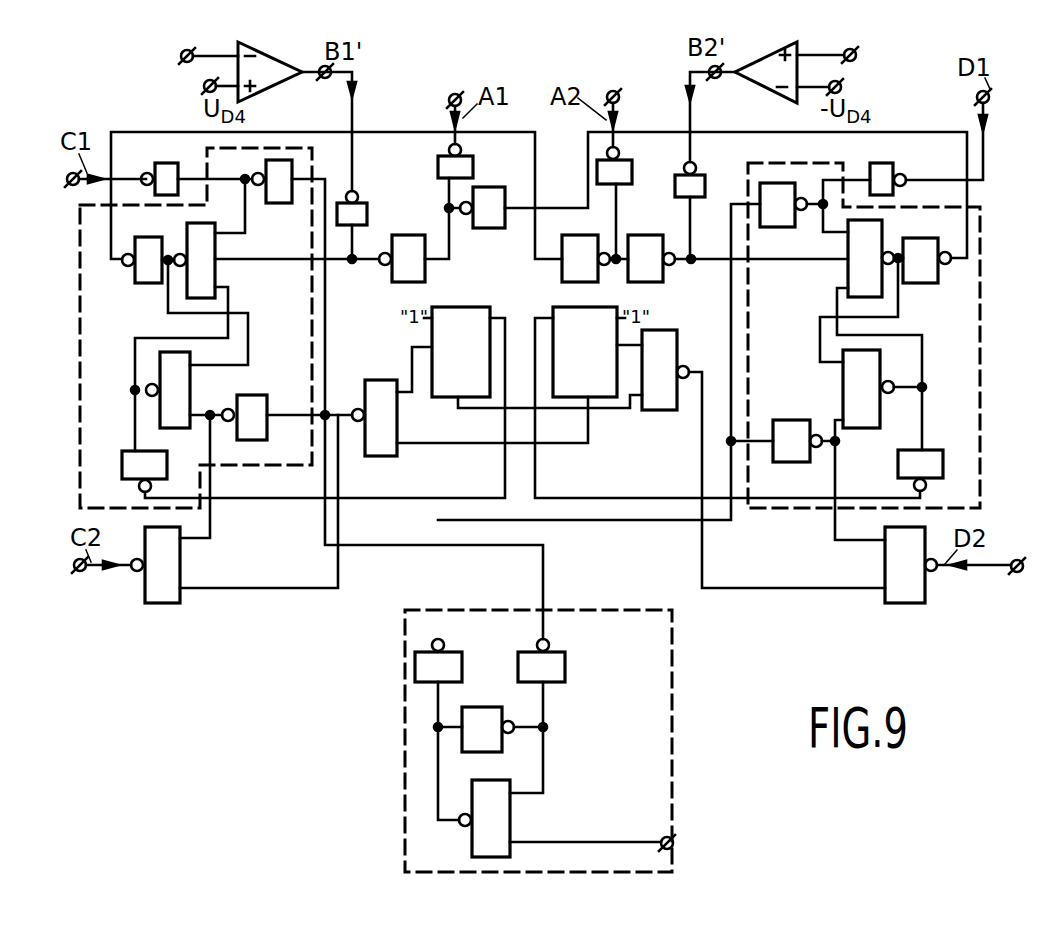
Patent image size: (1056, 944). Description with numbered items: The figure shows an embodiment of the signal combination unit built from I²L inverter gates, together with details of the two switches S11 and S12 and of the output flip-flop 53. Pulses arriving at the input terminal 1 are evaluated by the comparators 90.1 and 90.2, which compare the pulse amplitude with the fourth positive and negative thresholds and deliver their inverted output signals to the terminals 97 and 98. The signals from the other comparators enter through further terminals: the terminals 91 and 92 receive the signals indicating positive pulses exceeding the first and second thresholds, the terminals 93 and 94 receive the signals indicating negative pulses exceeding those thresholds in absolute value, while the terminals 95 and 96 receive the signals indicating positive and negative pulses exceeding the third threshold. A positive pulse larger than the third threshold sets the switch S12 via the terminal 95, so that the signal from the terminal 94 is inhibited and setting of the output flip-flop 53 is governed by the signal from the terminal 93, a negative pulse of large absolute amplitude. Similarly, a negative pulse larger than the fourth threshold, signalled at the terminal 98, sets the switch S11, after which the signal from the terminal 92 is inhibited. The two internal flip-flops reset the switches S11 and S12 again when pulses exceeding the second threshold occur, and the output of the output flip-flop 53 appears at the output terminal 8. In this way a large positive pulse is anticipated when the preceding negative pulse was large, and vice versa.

The input terminal 1 is at (181, 50).
The comparator 90.1 is at (262, 54).
The comparator 90.2 is at (762, 58).
The terminal 91 is at (66, 172).
The terminal 92 is at (88, 574).
The terminal 93 is at (992, 97).
The terminal 94 is at (1021, 577).
The terminal 95 is at (448, 93).
The terminal 96 is at (618, 92).
The terminal 97 is at (329, 80).
The terminal 98 is at (722, 80).
The output flip-flop 53 is at (672, 665).
The output terminal 8 is at (675, 842).
The switch S11 is at (80, 362).
The switch S12 is at (982, 362).